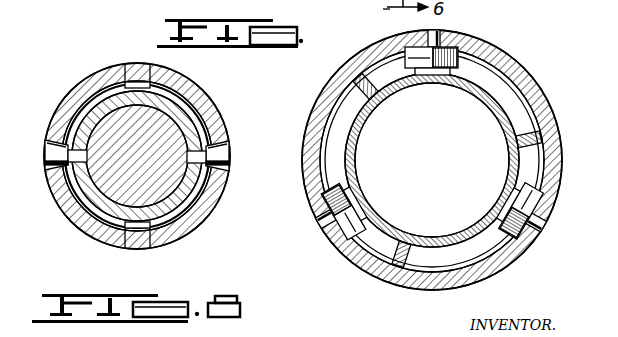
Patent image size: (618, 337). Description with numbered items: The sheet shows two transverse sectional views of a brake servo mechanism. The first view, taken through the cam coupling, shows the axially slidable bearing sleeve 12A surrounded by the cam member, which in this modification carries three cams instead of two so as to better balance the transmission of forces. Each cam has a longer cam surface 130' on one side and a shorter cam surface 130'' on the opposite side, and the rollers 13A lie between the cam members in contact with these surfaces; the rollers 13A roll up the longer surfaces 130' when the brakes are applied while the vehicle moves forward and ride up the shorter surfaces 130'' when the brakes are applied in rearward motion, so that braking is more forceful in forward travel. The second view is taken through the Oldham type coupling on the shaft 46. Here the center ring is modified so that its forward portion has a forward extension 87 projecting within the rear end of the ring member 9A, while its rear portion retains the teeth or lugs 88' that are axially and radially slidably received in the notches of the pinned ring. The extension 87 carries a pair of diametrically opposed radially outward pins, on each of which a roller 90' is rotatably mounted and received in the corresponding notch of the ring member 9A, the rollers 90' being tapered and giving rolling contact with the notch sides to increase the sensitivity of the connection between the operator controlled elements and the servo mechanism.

In FIG. 8, the ring member 9A is at (176, 81).
In FIG. 8, the shaft 46 is at (161, 123).
In FIG. 8, the forward extension 87 is at (200, 132).
In FIG. 8, the teeth or lugs 88' is at (157, 245).
In FIG. 8, the roller 90' is at (138, 172).
In FIG. 6, the longer cam surface 130' is at (449, 169).
In FIG. 6, the shorter cam surface 130'' is at (402, 160).
In FIG. 6, the sleeve 12A is at (357, 142).
In FIG. 6, the rollers 13A is at (421, 63).